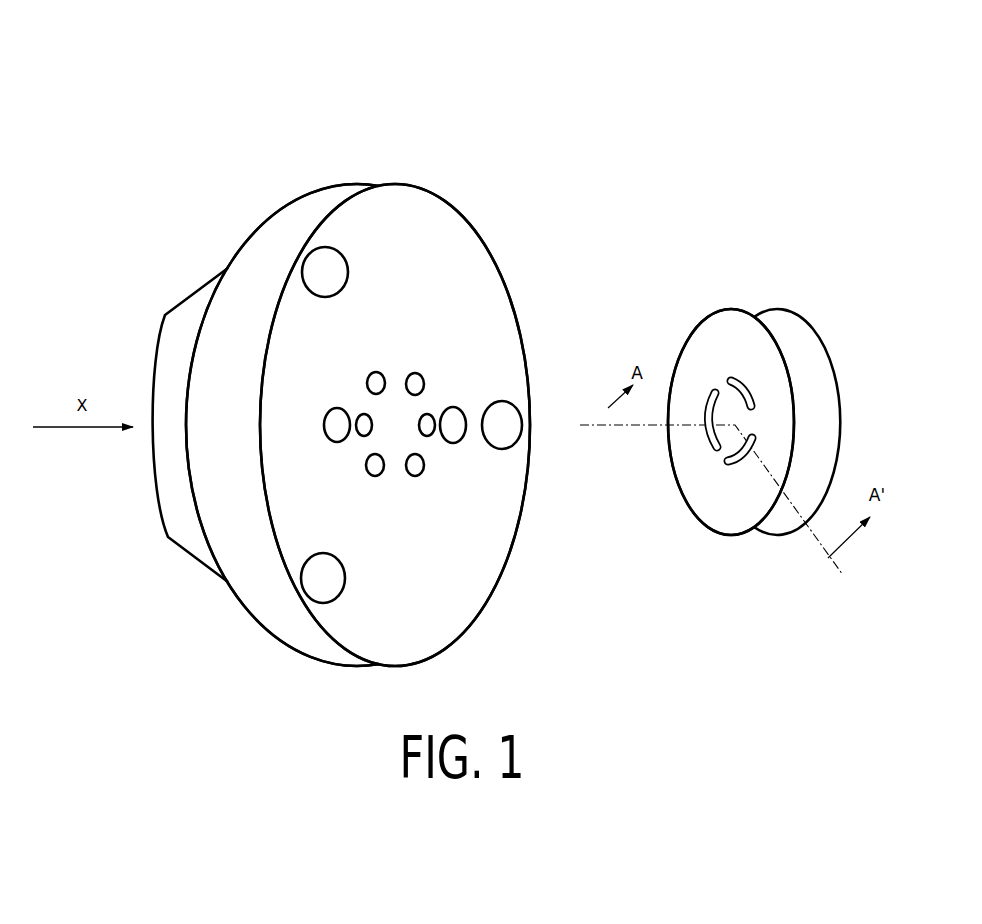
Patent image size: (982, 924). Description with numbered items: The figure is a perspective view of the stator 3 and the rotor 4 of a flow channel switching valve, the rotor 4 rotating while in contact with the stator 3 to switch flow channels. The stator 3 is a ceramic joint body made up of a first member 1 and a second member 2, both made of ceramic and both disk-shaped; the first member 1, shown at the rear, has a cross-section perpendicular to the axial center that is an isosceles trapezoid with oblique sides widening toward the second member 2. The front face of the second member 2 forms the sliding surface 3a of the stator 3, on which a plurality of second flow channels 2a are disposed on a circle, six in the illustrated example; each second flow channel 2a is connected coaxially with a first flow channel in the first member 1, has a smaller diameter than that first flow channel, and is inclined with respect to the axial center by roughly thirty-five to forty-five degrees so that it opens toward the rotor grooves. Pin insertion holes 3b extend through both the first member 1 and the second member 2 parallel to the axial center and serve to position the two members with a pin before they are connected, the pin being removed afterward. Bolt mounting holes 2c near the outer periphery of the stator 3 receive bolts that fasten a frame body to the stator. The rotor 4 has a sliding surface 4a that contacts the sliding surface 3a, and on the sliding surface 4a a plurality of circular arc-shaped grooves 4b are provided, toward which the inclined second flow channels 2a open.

The first member 1 is at (185, 323).
The second member 2 is at (325, 203).
The second flow channel 2a is at (425, 382).
The bolt mounting hole 2c is at (333, 270).
The stator 3 is at (232, 103).
The sliding surface of the stator 3a is at (462, 267).
The pin insertion hole 3b is at (467, 413).
The rotor 4 is at (765, 307).
The sliding surface of the rotor 4a is at (717, 510).
The circular arc-shaped groove 4b is at (703, 438).